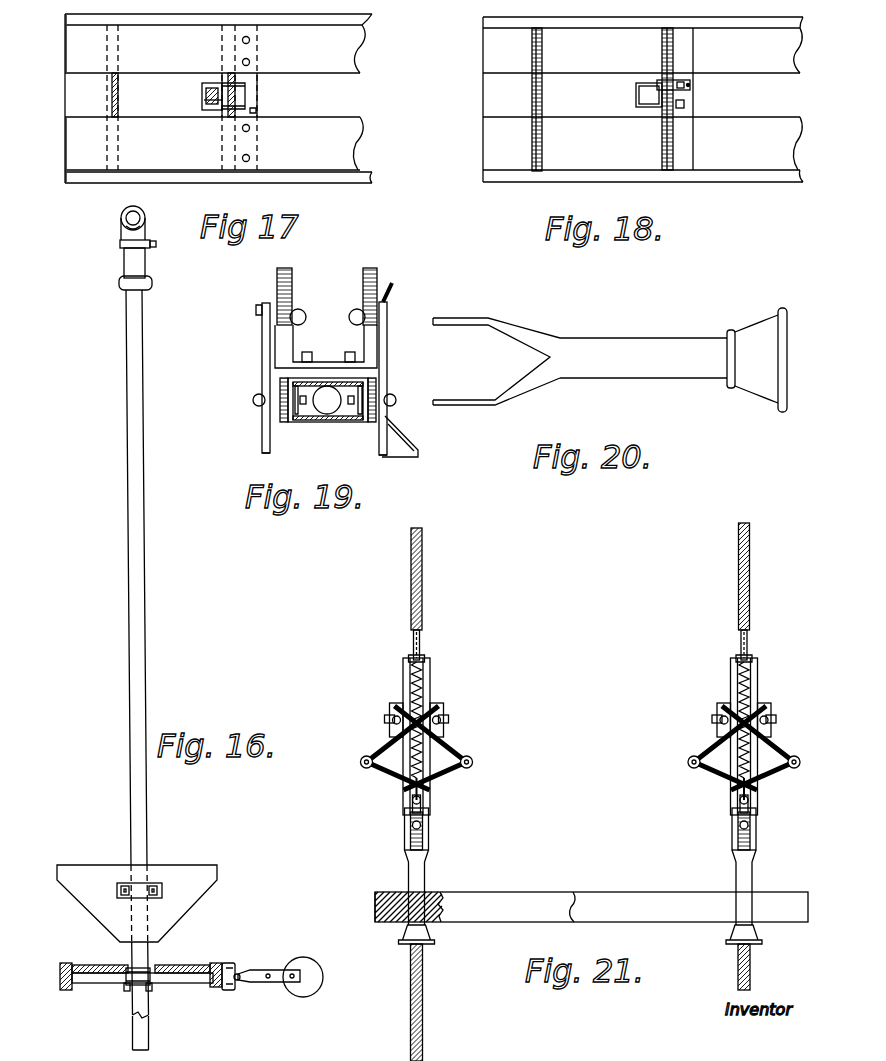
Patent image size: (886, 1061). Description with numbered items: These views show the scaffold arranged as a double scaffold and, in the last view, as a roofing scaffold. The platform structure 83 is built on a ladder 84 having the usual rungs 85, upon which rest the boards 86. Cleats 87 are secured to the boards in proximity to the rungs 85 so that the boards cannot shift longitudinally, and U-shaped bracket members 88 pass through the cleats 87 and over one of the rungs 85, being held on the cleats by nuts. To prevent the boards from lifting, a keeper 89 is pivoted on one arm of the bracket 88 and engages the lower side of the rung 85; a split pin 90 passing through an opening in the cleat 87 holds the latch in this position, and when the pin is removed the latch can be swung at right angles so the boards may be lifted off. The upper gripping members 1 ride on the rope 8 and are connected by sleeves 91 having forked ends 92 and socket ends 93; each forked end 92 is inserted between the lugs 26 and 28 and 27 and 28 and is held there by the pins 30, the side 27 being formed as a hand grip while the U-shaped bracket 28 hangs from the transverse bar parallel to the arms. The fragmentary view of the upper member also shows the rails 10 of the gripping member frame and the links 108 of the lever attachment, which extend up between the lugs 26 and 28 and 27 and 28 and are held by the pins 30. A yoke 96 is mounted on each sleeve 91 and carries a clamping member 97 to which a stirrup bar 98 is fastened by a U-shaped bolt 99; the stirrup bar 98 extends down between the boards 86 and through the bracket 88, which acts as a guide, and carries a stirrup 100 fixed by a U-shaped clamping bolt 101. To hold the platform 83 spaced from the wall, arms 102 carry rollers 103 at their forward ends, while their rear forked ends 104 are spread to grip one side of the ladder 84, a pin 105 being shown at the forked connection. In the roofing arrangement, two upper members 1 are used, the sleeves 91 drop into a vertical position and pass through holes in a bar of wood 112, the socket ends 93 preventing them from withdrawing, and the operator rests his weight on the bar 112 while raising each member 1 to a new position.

In FIG. 21, the upper gripping member 1 is at (581, 735).
In FIG. 21, the rope 8 is at (423, 583).
In FIG. 19, the track rails 10 is at (292, 292).
In FIG. 19, the arm of frame side 26 is at (280, 383).
In FIG. 19, the arm of frame side 27 is at (410, 442).
In FIG. 19, the U-shaped bracket 28 is at (355, 412).
In FIG. 19, the bolt 30 is at (253, 402).
In FIG. 21, the bolt 30 is at (404, 826).
In FIG. 17, the platform structure 83 is at (202, 98).
In FIG. 17, the ladder 84 is at (205, 185).
In FIG. 18, the ladder 84 is at (608, 28).
In FIG. 16, the ladder 84 is at (63, 963).
In FIG. 17, the rung 85 is at (118, 97).
In FIG. 18, the rung 85 is at (532, 93).
In FIG. 17, the board 86 is at (122, 97).
In FIG. 18, the board 86 is at (642, 99).
In FIG. 16, the board 86 is at (95, 965).
In FIG. 17, the cleat 87 is at (250, 90).
In FIG. 16, the cleat 87 is at (90, 983).
In FIG. 17, the bracket member 88 is at (202, 104).
In FIG. 18, the bracket member 88 is at (634, 93).
In FIG. 16, the bracket member 88 is at (127, 970).
In FIG. 17, the keeper 89 is at (258, 110).
In FIG. 18, the keeper 89 is at (684, 89).
In FIG. 16, the keeper 89 is at (152, 988).
In FIG. 18, the split pin 90 is at (690, 84).
In FIG. 19, the sleeve 91 is at (336, 337).
In FIG. 20, the sleeve 91 is at (622, 352).
In FIG. 21, the sleeve 91 is at (420, 874).
In FIG. 19, the forked end 92 is at (272, 420).
In FIG. 20, the forked end 92 is at (468, 328).
In FIG. 21, the forked end 92 is at (428, 820).
In FIG. 20, the socket end 93 is at (753, 340).
In FIG. 21, the socket end 93 is at (432, 936).
In FIG. 16, the yoke 96 is at (120, 220).
In FIG. 16, the clamping member 97 is at (124, 262).
In FIG. 21, the clamping member 97 is at (756, 828).
In FIG. 17, the stirrup bar 98 is at (200, 88).
In FIG. 16, the stirrup bar 98 is at (142, 332).
In FIG. 16, the U-shaped bolt 99 is at (130, 290).
In FIG. 16, the stirrup 100 is at (192, 896).
In FIG. 16, the U-shaped clamping bolt 101 is at (117, 889).
In FIG. 16, the arm 102 is at (262, 982).
In FIG. 16, the roller 103 is at (318, 990).
In FIG. 16, the forked end 104 is at (237, 965).
In FIG. 16, the pin 105 is at (236, 982).
In FIG. 19, the link 108 is at (266, 450).
In FIG. 21, the bar of wood 112 is at (591, 907).